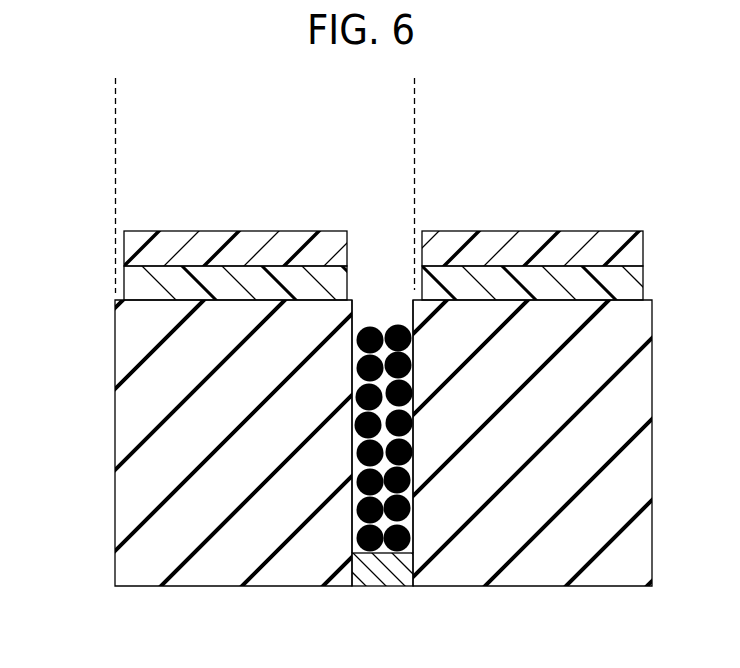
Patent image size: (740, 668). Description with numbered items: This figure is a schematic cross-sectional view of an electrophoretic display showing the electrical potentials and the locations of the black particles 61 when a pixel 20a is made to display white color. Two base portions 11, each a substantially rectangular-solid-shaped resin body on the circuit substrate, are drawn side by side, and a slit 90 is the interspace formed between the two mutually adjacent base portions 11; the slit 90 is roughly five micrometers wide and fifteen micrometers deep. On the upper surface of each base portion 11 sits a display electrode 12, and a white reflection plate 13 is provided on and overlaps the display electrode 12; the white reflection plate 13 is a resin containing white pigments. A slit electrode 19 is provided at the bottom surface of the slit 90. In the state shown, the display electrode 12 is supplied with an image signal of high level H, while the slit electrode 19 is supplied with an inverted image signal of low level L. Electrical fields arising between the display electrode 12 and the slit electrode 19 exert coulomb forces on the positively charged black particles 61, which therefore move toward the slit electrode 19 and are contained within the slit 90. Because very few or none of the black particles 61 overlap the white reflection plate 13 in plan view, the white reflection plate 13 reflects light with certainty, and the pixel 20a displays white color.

The base portion 11 is at (135, 420).
The display electrode 12 is at (124, 280).
The white reflection plate 13 is at (124, 237).
The slit electrode 19 is at (372, 587).
The pixel 20a is at (414, 97).
The black particle 61 is at (372, 326).
The slit 90 is at (390, 258).
The high-level image signal H is at (390, 284).
The low-level inverted image signal L is at (381, 574).